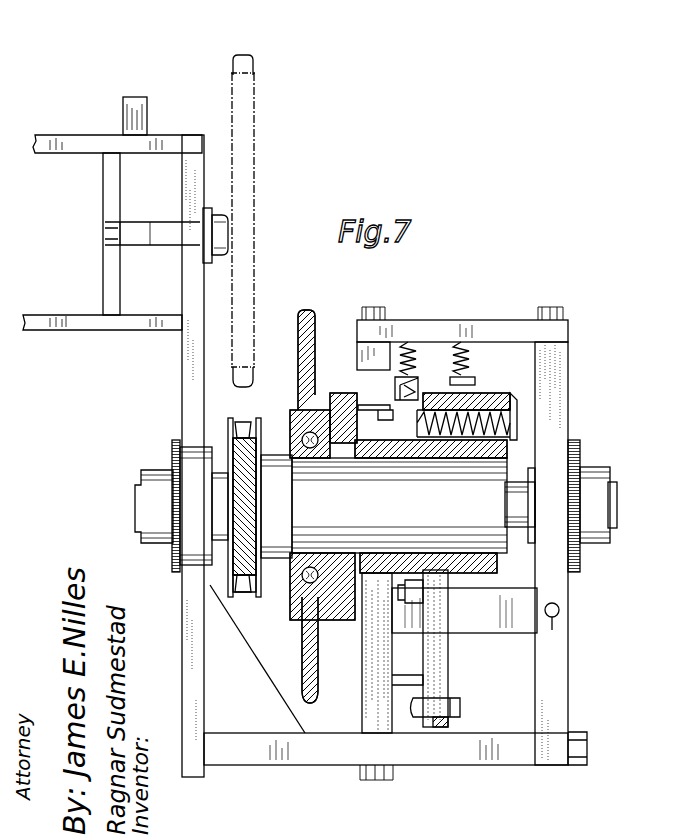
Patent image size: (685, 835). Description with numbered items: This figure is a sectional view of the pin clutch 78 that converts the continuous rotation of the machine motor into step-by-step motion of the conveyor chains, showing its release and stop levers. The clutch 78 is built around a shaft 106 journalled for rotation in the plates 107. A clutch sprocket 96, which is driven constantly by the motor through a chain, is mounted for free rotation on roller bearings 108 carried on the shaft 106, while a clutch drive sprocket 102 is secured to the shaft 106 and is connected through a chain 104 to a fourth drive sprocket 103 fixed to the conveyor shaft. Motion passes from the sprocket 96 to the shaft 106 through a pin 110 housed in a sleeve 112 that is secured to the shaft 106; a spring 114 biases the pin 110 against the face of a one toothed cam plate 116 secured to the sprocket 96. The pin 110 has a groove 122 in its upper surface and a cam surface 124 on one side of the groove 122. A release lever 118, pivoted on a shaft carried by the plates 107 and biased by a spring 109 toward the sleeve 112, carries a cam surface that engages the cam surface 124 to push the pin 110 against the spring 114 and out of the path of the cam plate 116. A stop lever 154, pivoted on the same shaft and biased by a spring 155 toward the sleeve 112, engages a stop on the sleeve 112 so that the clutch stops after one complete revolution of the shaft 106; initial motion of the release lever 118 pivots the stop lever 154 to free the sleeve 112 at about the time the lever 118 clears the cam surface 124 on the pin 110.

The clutch 78 is at (535, 298).
The clutch sprocket 96 is at (303, 650).
The clutch drive sprocket 102 is at (247, 425).
The fourth drive sprocket 103 is at (243, 140).
The chain 104 is at (252, 588).
The shaft 106 is at (522, 497).
The plates 107 is at (553, 672).
The roller bearings 108 is at (172, 452).
The spring 109 is at (415, 345).
The pin 110 is at (353, 420).
The sleeve 112 is at (515, 440).
The spring 114 is at (510, 420).
The one toothed cam plate 116 is at (348, 616).
The release lever 118 is at (395, 383).
The groove 122 is at (385, 420).
The cam surface 124 is at (402, 400).
The stop lever 154 is at (475, 380).
The spring 155 is at (466, 347).